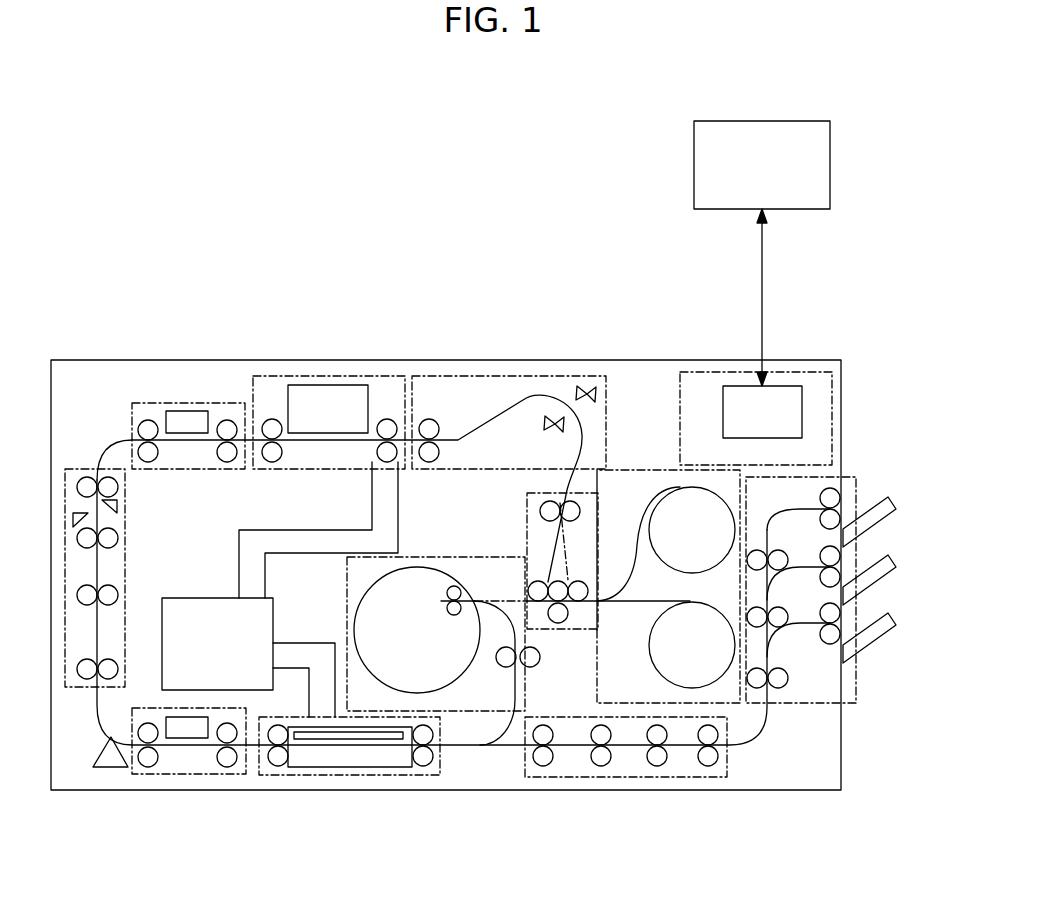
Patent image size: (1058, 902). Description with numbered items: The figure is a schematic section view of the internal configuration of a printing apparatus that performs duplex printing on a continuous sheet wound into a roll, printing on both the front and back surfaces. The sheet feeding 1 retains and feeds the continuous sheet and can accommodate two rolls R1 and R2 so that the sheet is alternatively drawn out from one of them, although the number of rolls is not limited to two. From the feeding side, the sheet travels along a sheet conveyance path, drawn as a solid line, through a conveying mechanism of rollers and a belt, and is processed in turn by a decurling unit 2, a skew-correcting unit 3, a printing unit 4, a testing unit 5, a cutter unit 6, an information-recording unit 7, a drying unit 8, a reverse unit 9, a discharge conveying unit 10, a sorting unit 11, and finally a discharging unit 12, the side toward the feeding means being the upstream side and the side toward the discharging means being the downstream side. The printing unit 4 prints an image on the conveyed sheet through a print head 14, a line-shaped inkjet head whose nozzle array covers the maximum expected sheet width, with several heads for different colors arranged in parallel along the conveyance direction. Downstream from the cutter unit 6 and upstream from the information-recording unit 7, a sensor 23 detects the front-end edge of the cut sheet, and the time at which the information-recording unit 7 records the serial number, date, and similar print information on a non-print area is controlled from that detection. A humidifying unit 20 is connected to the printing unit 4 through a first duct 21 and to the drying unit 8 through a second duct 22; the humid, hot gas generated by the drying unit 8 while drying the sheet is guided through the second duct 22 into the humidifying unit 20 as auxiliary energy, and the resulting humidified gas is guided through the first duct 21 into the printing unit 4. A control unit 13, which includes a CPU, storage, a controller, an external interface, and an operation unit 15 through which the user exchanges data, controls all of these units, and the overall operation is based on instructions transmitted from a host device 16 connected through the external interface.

The sheet feeding 1 is at (648, 473).
The decurling unit 2 is at (592, 503).
The skew-correcting unit 3 is at (517, 385).
The printing unit 4 is at (393, 385).
The testing unit 5 is at (222, 410).
The cutter unit 6 is at (72, 477).
The information-recording unit 7 is at (205, 767).
The drying unit 8 is at (358, 770).
The reverse unit 9 is at (468, 696).
The discharge conveying unit 10 is at (575, 762).
The sorting unit 11 is at (805, 697).
The discharging unit 12 is at (899, 482).
The control unit 13 is at (820, 388).
The print head 14 is at (345, 393).
The operation unit 15 is at (785, 386).
The host device 16 is at (765, 121).
The humidifying unit 20 is at (188, 677).
The first duct 21 is at (278, 540).
The second duct 22 is at (297, 657).
The sensor 23 is at (110, 758).
The roll R1 is at (703, 500).
The roll R2 is at (680, 677).